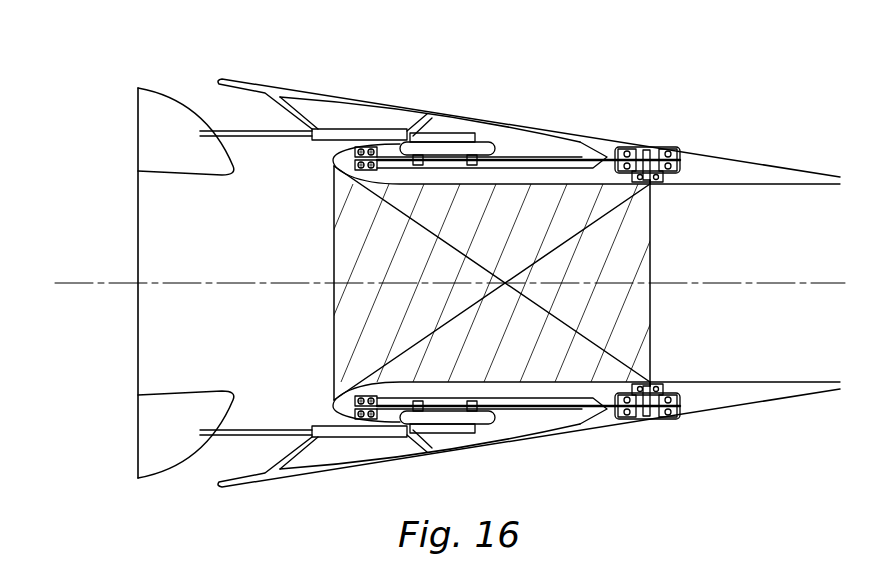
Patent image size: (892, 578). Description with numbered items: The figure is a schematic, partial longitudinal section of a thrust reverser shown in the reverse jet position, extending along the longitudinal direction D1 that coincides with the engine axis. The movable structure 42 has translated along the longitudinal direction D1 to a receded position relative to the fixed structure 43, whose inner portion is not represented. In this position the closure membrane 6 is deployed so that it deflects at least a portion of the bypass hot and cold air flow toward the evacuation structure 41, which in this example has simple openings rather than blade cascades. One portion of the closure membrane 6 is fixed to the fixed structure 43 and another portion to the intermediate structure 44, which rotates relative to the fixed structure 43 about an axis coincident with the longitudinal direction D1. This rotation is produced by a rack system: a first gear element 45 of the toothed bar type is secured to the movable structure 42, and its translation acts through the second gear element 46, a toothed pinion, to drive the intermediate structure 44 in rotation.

The closure membrane 6 is at (630, 313).
The evacuation structure 41 is at (208, 100).
The movable structure 42 is at (552, 436).
The fixed structure 43 is at (483, 143).
The intermediate structure 44 is at (655, 186).
The first gear element 45 is at (582, 157).
The second gear element 46 is at (648, 421).
The longitudinal direction D1 is at (78, 282).